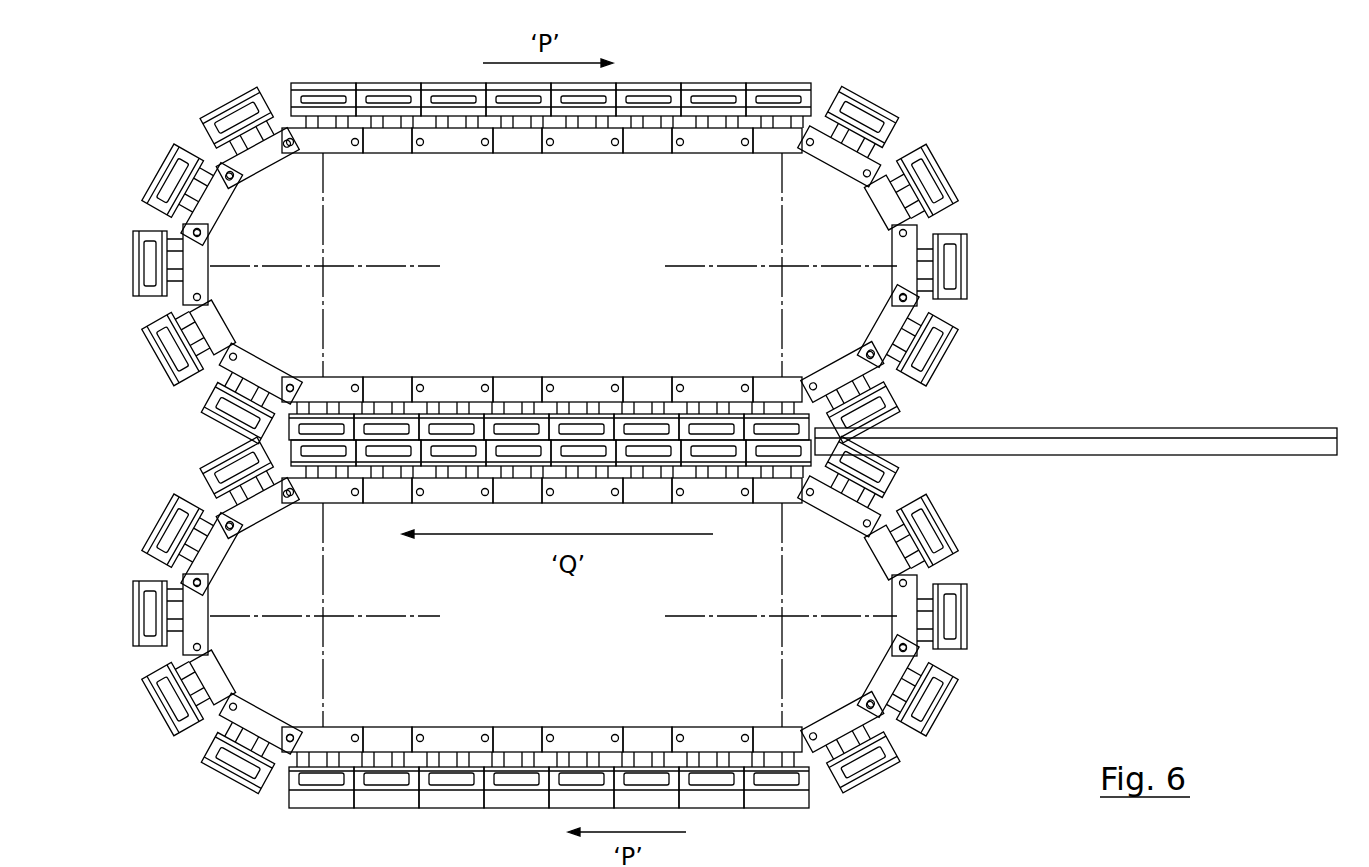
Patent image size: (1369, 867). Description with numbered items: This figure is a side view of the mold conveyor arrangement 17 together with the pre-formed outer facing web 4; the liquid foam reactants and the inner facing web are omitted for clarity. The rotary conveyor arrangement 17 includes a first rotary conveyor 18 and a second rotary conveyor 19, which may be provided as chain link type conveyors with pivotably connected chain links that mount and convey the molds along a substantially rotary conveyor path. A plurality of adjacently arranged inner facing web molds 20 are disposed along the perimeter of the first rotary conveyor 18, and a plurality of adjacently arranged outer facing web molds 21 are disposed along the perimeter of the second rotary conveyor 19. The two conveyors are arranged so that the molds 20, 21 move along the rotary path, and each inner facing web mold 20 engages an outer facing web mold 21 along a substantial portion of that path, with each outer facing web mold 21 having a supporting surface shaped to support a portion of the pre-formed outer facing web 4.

The pre-formed outer facing web 4 is at (1187, 445).
The mold conveyor arrangement 17 is at (643, 434).
The first rotary conveyor 18 is at (571, 257).
The second rotary conveyor 19 is at (521, 629).
The inner facing web mold 20 is at (876, 113).
The outer facing web mold 21 is at (293, 504).